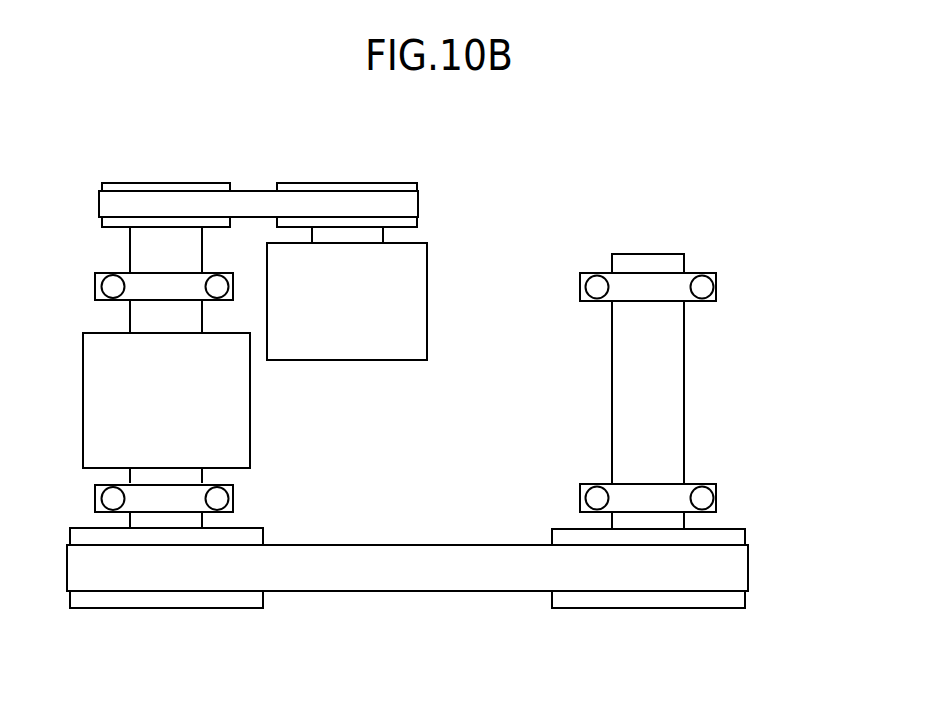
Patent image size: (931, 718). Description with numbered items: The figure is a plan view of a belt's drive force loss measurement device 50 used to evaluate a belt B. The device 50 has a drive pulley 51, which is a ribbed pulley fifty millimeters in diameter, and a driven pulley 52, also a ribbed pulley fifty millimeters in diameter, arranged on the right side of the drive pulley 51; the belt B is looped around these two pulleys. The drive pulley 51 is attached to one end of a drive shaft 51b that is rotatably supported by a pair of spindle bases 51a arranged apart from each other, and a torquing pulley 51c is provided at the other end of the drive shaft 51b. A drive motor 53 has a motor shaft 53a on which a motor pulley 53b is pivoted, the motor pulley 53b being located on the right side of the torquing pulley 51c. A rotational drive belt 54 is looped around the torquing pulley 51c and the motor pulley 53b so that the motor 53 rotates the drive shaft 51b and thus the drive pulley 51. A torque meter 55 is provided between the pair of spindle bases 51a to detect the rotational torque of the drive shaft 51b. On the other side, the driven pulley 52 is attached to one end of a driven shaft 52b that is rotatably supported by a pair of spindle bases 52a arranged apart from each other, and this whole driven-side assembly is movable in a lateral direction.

The belt's drive force loss measurement device 50 is at (772, 191).
The drive pulley 51 is at (167, 598).
The spindle bases 51a is at (140, 286).
The drive shaft 51b is at (140, 240).
The torquing pulley 51c is at (167, 182).
The driven pulley 52 is at (653, 598).
The spindle bases 52a is at (675, 287).
The driven shaft 52b is at (663, 395).
The drive motor 53 is at (410, 302).
The motor shaft 53a is at (373, 235).
The motor pulley 53b is at (352, 182).
The rotational drive belt 54 is at (254, 190).
The torque meter 55 is at (233, 410).
The belt B is at (405, 545).